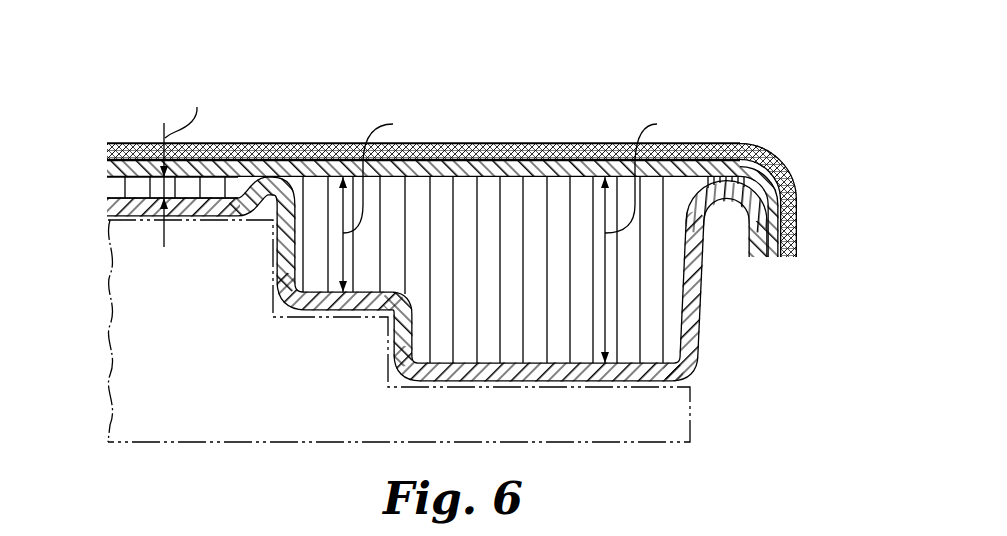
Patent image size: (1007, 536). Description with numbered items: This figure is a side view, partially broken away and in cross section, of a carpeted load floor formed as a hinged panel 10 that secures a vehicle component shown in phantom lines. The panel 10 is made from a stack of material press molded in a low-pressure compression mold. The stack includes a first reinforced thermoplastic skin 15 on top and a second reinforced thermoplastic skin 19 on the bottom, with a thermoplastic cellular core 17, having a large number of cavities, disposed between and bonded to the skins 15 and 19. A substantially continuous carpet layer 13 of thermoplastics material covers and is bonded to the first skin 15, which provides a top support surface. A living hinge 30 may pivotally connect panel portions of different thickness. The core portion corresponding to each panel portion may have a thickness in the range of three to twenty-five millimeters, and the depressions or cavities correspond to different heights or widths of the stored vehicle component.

The hinged panel 10 is at (497, 45).
The carpet layer 13 is at (107, 151).
The first skin 15 is at (107, 170).
The thermoplastic cellular core 17 is at (115, 188).
The second skin 19 is at (107, 206).
The living hinge 30 is at (265, 143).